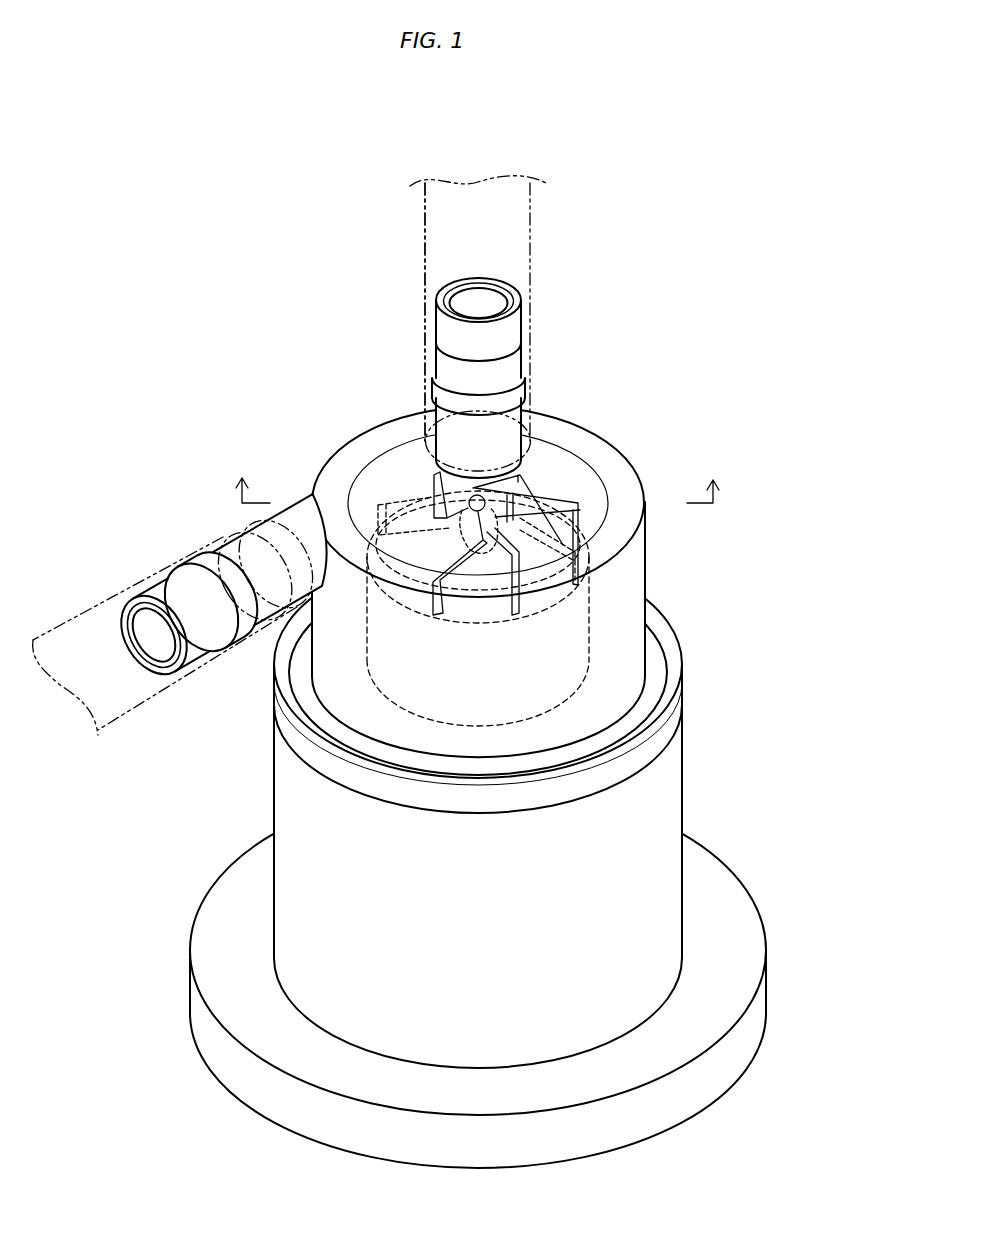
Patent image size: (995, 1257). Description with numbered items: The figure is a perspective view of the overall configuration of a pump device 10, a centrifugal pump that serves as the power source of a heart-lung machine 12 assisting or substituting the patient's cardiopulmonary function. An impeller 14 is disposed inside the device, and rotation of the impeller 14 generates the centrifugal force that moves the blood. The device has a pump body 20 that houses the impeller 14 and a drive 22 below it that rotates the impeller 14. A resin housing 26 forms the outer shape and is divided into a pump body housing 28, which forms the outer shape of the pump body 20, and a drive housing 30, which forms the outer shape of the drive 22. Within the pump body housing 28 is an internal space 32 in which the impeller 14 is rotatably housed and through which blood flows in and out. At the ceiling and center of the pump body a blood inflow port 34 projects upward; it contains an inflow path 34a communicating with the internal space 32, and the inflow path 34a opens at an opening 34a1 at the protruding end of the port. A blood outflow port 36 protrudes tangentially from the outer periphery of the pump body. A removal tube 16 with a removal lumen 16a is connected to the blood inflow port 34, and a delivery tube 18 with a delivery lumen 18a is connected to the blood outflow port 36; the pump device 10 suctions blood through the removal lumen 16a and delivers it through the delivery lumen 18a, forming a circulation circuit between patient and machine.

The pump device 10 is at (257, 355).
The heart-lung machine 12 is at (301, 203).
The impeller 14 is at (553, 487).
The removal tube 16 is at (532, 212).
The removal lumen 16a is at (466, 238).
The delivery tube 18 is at (148, 575).
The delivery lumen 18a is at (127, 687).
The pump body 20 is at (652, 553).
The drive 22 is at (695, 783).
The housing 26 is at (752, 617).
The pump body housing 28 is at (647, 592).
The drive housing 30 is at (683, 743).
The internal space 32 is at (388, 467).
The blood inflow port 34 is at (522, 360).
The inflow path 34a is at (447, 368).
The opening 34a1 is at (487, 283).
The blood outflow port 36 is at (187, 573).